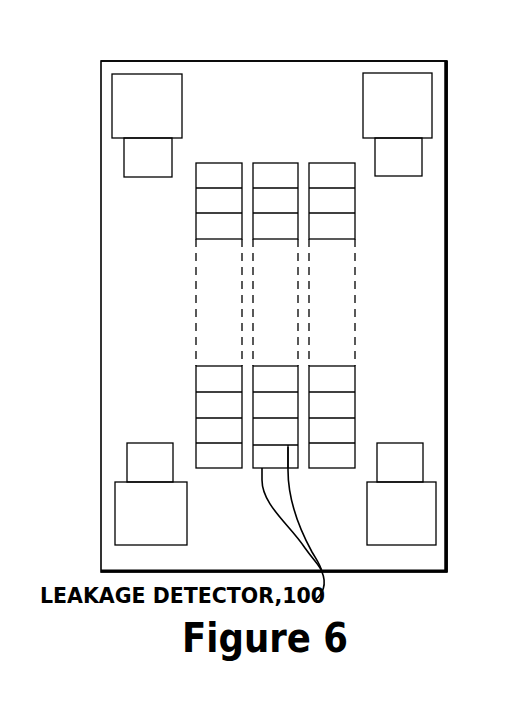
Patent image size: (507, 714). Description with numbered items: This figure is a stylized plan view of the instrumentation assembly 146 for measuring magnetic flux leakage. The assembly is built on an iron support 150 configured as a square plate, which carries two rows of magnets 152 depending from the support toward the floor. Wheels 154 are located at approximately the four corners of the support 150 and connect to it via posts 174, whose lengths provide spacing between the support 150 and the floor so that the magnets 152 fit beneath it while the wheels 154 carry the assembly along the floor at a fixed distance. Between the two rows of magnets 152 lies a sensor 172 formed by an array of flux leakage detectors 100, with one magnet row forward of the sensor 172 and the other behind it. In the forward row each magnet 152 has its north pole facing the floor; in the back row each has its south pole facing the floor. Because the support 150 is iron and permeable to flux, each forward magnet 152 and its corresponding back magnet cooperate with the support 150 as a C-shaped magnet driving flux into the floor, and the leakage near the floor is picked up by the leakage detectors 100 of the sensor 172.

The flux leakage detector 100 is at (268, 162).
The instrumentation assembly 146 is at (80, 250).
The support 150 is at (448, 63).
The magnets 152 is at (196, 203).
The wheels 154 is at (112, 92).
The sensor 172 is at (256, 138).
The posts 174 is at (124, 160).